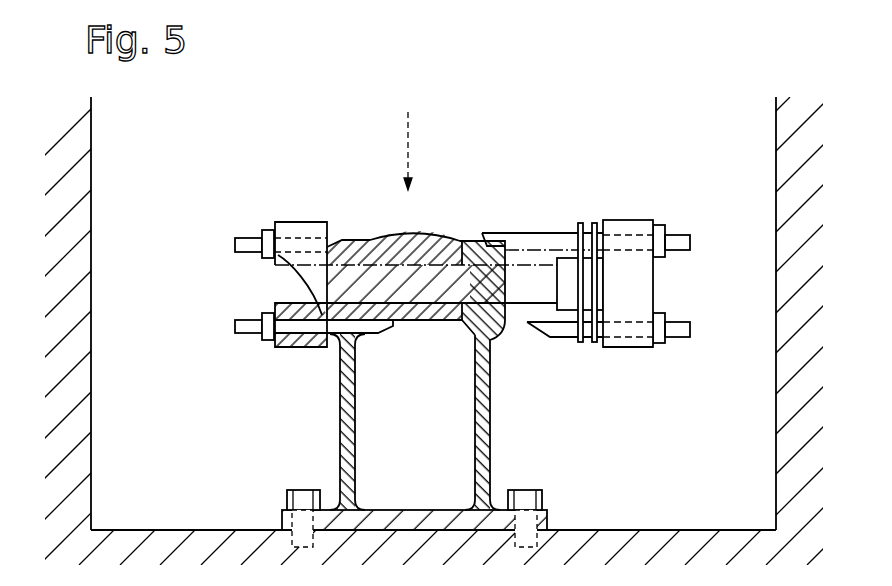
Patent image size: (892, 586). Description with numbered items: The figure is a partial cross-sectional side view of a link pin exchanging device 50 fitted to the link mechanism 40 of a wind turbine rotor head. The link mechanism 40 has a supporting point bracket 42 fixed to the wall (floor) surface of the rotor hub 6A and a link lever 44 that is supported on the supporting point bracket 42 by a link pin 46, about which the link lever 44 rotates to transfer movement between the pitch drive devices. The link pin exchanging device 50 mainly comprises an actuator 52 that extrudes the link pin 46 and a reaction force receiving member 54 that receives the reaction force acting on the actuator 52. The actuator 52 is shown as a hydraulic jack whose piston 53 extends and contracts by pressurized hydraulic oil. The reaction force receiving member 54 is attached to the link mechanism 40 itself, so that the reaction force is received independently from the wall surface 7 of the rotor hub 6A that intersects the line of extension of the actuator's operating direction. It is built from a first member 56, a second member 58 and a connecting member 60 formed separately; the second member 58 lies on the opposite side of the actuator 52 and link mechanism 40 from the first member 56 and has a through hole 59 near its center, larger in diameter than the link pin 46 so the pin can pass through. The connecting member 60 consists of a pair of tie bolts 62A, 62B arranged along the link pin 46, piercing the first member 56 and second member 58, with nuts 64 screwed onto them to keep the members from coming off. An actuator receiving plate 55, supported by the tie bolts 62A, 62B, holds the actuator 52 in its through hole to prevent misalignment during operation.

The wall surface 7 is at (91, 130).
The rotor hub 6A is at (598, 530).
The link mechanism 40 is at (464, 196).
The supporting point bracket 42 is at (491, 406).
The link lever 44 is at (425, 322).
The link pin 46 is at (495, 331).
The link pin exchanging device 50 is at (686, 147).
The actuator 52 is at (553, 244).
The piston 53 is at (528, 255).
The reaction force receiving member 54 is at (641, 200).
The actuator receiving plate 55 is at (595, 345).
The first member 56 is at (637, 348).
The second member 58 is at (290, 348).
The through hole 59 is at (284, 300).
The connecting member 60 is at (148, 195).
The tie bolt 62A is at (236, 245).
The tie bolt 62B is at (236, 326).
The nut 64 is at (268, 230).